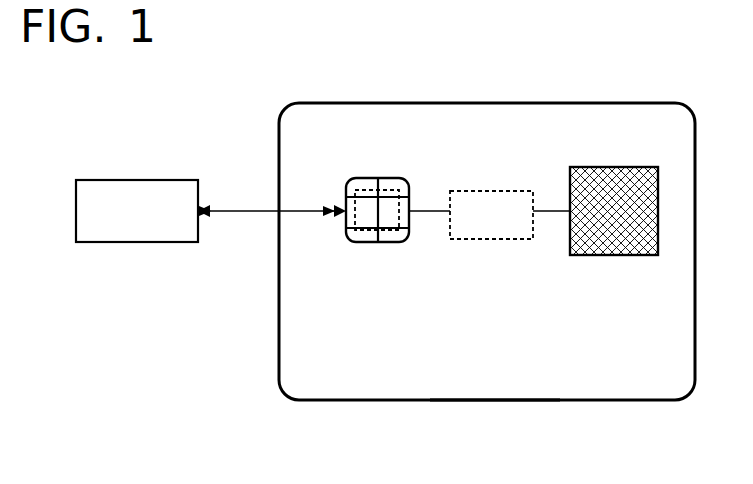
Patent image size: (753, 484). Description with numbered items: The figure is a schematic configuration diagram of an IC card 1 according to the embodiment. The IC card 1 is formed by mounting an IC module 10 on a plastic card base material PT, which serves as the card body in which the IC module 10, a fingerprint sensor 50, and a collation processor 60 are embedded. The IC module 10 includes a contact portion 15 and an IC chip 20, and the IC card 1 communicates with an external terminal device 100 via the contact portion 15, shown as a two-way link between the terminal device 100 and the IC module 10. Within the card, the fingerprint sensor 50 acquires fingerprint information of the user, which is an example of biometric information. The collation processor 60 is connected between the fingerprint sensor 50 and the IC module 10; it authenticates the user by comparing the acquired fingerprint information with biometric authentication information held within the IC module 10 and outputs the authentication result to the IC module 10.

The IC card 1 is at (500, 103).
The card base material PT is at (493, 400).
The terminal device 100 is at (148, 180).
The IC module 10 is at (383, 208).
The contact portion 15 is at (395, 242).
The IC chip 20 is at (366, 232).
The collation processor 60 is at (490, 191).
The fingerprint sensor 50 is at (615, 167).